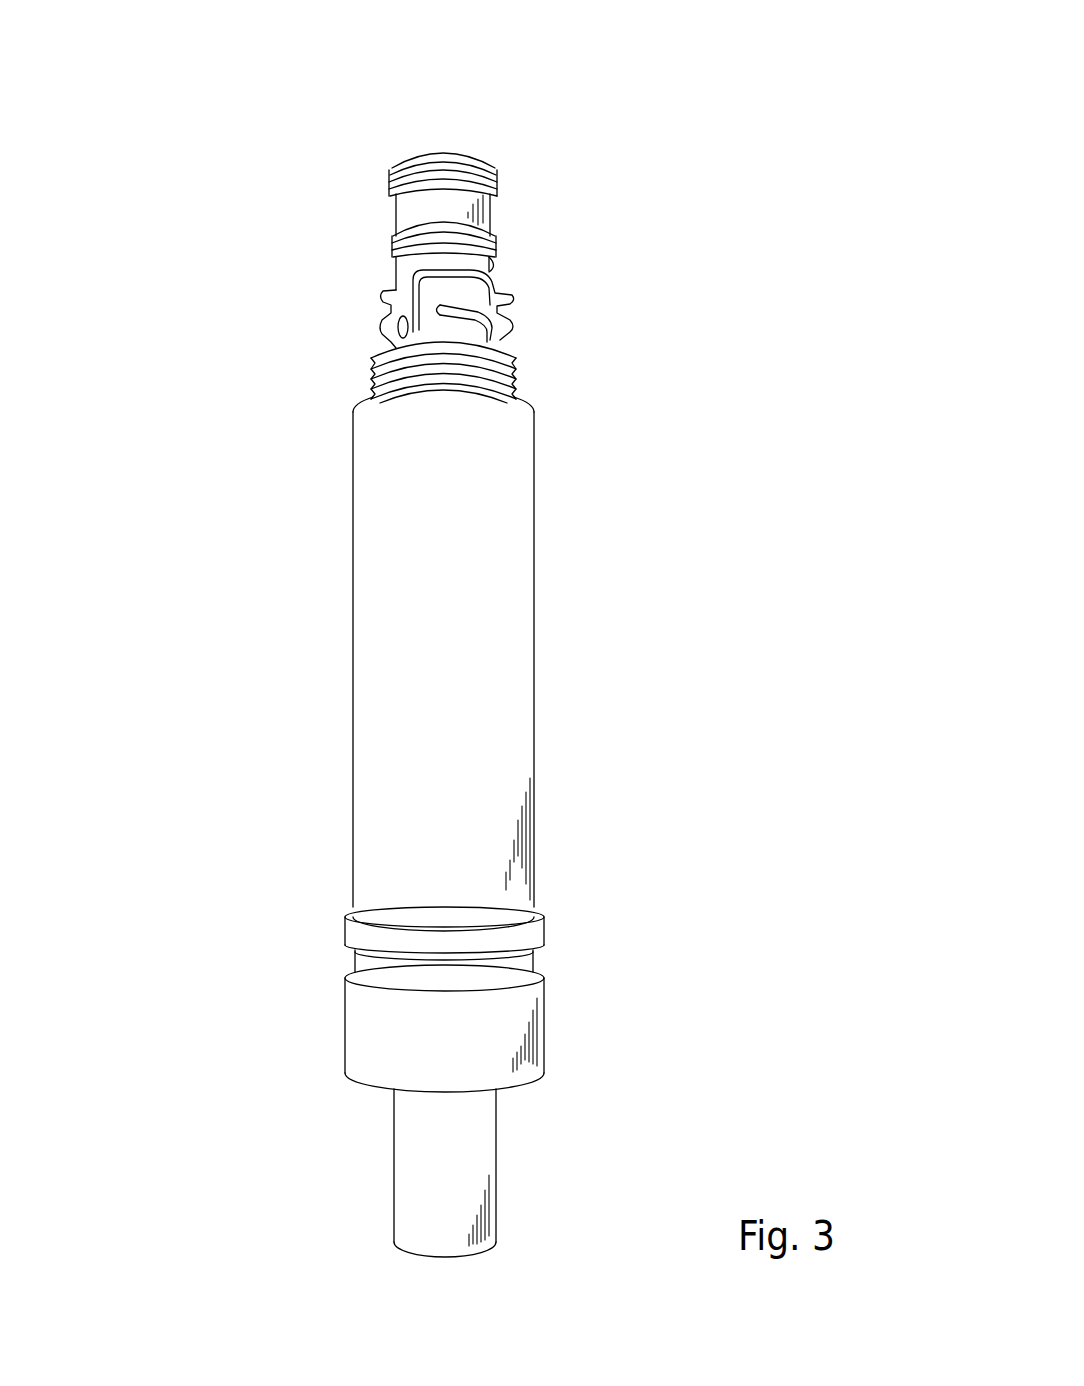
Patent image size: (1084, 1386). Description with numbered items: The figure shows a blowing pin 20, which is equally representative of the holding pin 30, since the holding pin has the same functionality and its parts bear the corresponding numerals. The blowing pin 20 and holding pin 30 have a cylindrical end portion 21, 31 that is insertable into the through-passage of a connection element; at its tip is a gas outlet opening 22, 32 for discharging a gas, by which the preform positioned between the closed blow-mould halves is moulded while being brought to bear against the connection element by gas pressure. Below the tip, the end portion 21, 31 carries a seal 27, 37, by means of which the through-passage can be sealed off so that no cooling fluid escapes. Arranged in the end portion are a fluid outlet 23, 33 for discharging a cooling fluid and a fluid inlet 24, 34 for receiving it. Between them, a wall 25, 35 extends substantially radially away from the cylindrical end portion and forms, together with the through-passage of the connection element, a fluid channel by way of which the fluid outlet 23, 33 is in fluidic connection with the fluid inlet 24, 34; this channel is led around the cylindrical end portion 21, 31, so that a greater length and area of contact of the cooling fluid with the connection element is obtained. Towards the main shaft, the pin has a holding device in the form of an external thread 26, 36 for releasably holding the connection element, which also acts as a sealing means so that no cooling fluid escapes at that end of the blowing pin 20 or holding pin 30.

The blowing pin 20 is at (500, 630).
The holding pin 30 is at (232, 78).
The end portion 21 is at (500, 206).
The end portion 31 is at (803, 142).
The gas outlet opening 22 is at (402, 179).
The gas outlet opening 32 is at (456, 132).
The fluid outlet 23 is at (226, 309).
The fluid outlet 33 is at (385, 326).
The fluid inlet 24 is at (576, 210).
The fluid inlet 34 is at (493, 264).
The wall 25 is at (570, 309).
The wall 35 is at (500, 318).
The external thread 26 is at (565, 372).
The external thread 36 is at (498, 377).
The seal 27 is at (271, 168).
The seal 37 is at (390, 172).